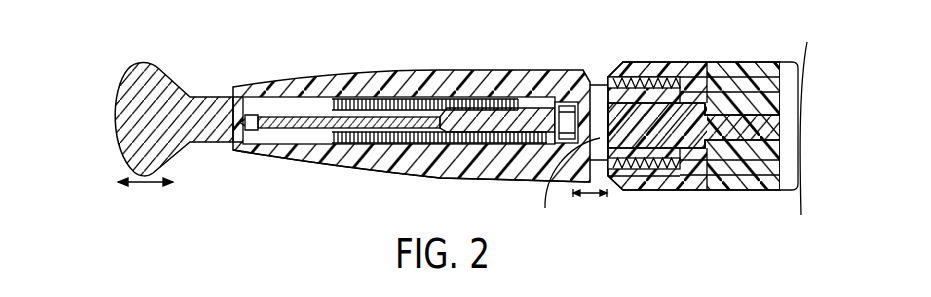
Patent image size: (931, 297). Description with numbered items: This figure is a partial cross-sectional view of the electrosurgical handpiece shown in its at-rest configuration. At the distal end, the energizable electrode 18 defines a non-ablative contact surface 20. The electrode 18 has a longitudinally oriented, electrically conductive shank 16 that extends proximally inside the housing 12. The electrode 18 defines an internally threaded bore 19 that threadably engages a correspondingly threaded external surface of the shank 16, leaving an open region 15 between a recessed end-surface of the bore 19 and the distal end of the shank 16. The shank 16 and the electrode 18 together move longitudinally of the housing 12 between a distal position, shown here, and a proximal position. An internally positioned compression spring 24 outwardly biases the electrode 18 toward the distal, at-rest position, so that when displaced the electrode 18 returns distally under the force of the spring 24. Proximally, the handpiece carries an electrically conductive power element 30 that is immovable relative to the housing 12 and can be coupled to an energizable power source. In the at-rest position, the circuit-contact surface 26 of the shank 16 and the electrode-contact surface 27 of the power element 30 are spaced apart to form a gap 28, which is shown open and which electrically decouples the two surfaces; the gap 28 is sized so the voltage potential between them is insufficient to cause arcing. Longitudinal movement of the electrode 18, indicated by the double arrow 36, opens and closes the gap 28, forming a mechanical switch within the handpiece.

The housing 12 is at (444, 80).
The open region 15 is at (256, 116).
The shank 16 is at (300, 118).
The electrode 18 is at (445, 131).
The internally threaded bore 19 is at (307, 140).
The non-ablative contact surface 20 is at (132, 92).
The compression spring 24 is at (405, 171).
The circuit-contact surface 26 is at (578, 102).
The electrode-contact surface 27 is at (546, 206).
The gap 28 is at (593, 198).
The power element 30 is at (660, 123).
The axial movement 36 is at (143, 185).